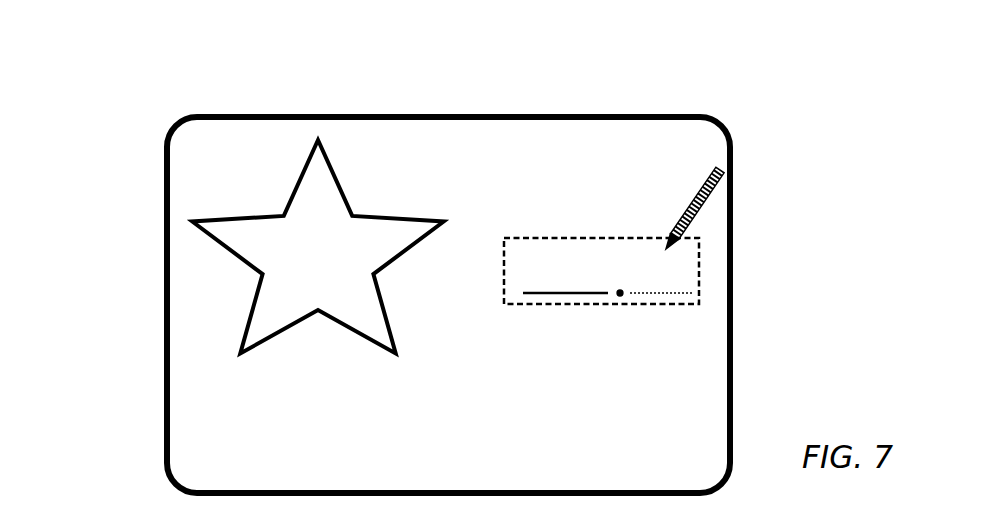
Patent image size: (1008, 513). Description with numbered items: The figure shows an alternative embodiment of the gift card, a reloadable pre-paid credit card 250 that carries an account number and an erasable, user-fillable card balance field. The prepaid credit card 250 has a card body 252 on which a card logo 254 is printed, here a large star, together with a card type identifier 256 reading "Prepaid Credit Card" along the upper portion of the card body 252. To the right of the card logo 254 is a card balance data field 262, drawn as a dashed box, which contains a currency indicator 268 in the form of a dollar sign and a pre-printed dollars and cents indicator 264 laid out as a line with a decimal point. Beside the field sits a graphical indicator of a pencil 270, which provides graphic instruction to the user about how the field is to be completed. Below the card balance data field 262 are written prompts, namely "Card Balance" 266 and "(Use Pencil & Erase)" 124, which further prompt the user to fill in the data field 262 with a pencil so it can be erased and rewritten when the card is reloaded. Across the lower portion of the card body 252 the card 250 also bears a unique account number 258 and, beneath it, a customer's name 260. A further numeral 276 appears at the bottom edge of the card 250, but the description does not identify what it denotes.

The reloadable pre-paid credit card 250 is at (136, 157).
The card body 252 is at (187, 408).
The card logo 254 is at (300, 175).
The card type identifier 256 is at (620, 140).
The unique account number 258 is at (682, 385).
The customer's name 260 is at (381, 458).
The card balance data field 262 is at (690, 238).
The pre-printed dollars and cents indicator 264 is at (680, 292).
The written prompt "Card Balance" 266 is at (678, 322).
The written prompt "(Use Pencil & Erase)" 124 is at (676, 348).
The currency indicator 268 is at (505, 252).
The graphical indicator of a pencil 270 is at (723, 176).
The lower card edge 276 is at (420, 503).